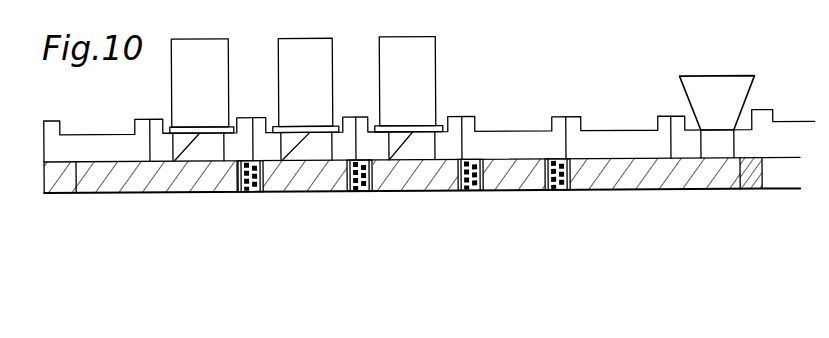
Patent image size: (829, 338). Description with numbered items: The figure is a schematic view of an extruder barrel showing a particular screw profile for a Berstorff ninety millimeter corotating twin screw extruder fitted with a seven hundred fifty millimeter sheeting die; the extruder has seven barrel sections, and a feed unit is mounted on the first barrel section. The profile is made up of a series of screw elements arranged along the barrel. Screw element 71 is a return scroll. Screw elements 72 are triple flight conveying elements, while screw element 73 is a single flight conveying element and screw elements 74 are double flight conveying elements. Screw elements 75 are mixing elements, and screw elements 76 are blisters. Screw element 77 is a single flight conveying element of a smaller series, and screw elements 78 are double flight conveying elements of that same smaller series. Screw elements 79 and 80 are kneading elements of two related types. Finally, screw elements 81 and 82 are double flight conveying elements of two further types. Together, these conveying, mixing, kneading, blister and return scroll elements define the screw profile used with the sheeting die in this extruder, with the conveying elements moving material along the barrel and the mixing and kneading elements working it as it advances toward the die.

The screw element 71 is at (752, 193).
The screw elements 72 is at (328, 193).
The screw element 73 is at (647, 193).
The screw elements 74 is at (612, 193).
The screw elements 75 is at (560, 193).
The screw elements 76 is at (353, 193).
The screw element 77 is at (535, 193).
The screw elements 78 is at (503, 193).
The screw element 79 is at (258, 193).
The screw element 80 is at (238, 193).
The screw element 81 is at (210, 193).
The screw element 82 is at (107, 193).